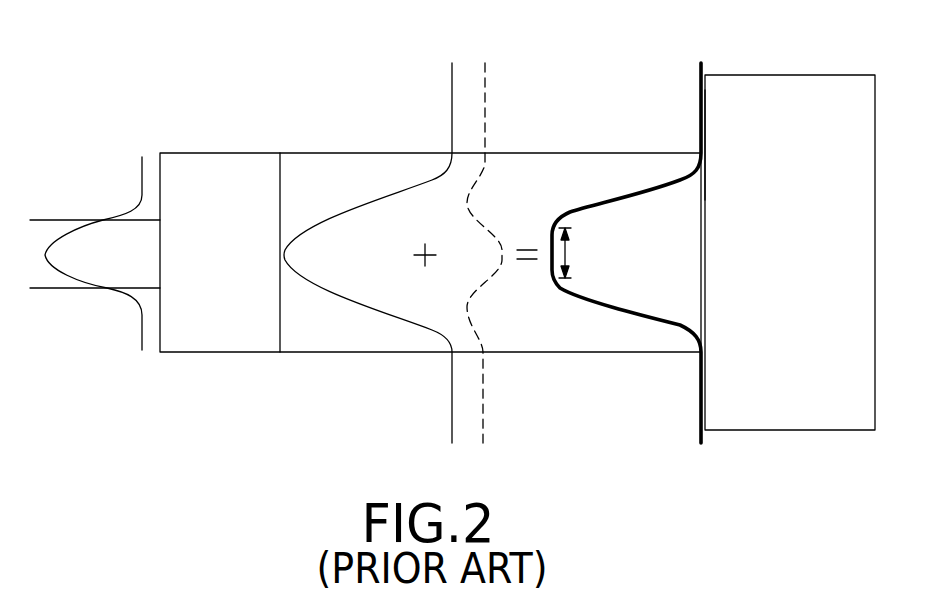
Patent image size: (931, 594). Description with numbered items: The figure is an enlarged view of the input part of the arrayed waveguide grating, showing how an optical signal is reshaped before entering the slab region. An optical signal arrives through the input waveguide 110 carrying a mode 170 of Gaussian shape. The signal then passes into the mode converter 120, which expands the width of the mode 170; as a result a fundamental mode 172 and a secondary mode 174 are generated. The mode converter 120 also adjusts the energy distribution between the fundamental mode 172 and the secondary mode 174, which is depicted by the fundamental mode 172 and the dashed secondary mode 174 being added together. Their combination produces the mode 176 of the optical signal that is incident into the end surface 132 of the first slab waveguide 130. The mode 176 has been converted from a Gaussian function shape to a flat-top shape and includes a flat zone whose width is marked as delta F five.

The input waveguide 110 is at (56, 220).
The mode converter 120 is at (212, 139).
The first slab waveguide 130 is at (782, 68).
The end surface 132 is at (706, 194).
The mode 170 is at (82, 278).
The fundamental mode 172 is at (358, 305).
The secondary mode 174 is at (487, 282).
The mode 176 is at (617, 315).